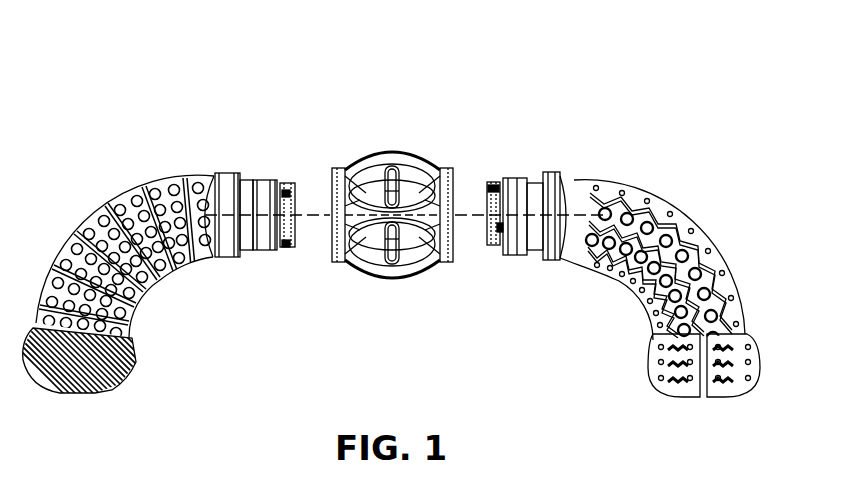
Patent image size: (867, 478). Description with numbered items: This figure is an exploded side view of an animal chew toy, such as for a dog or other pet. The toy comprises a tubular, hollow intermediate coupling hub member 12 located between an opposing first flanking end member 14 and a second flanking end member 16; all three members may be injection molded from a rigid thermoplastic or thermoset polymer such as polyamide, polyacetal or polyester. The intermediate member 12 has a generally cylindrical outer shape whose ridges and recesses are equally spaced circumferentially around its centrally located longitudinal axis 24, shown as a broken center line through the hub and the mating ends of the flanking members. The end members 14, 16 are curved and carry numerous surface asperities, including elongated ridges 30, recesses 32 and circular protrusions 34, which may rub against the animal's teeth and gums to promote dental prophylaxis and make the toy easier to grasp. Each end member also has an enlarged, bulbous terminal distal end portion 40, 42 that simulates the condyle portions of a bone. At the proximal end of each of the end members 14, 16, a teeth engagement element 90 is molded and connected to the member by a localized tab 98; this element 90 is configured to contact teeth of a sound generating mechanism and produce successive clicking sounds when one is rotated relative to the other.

The intermediate coupling hub member 12 is at (389, 120).
The first flanking end member 14 is at (173, 120).
The second flanking end member 16 is at (604, 120).
The longitudinal axis 24 is at (320, 216).
The elongated ridges 30 is at (100, 393).
The recesses 32 is at (123, 390).
The circular protrusions 34 is at (122, 202).
The terminal distal end portion 40 is at (130, 345).
The terminal distal end portion 42 is at (653, 373).
The teeth engagement element 90 is at (285, 190).
The localized tab 98 is at (501, 237).